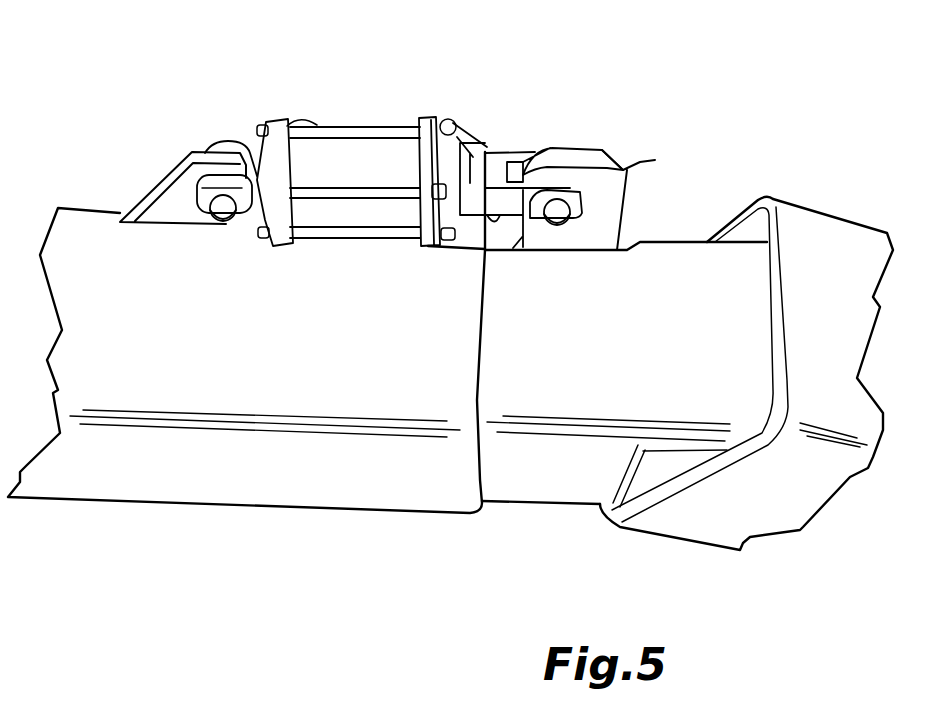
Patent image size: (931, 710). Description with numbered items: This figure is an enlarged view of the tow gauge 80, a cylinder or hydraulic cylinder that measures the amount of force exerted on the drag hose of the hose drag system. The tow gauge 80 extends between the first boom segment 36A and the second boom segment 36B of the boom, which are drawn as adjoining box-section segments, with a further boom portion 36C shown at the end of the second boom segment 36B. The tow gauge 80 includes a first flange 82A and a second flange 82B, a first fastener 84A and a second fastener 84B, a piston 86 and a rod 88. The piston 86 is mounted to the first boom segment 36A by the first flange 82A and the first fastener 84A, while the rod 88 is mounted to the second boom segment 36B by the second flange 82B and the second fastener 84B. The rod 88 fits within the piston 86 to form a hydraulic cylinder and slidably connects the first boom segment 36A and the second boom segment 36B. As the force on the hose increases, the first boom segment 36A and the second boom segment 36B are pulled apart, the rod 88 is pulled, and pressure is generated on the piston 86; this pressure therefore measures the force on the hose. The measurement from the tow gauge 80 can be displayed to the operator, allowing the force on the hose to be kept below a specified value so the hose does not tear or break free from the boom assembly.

The first boom segment 36A is at (340, 492).
The second boom segment 36B is at (548, 483).
The end bracket section 36C is at (685, 520).
The tow gauge 80 is at (385, 138).
The first flange 82A is at (137, 200).
The second flange 82B is at (632, 172).
The first fastener 84A is at (218, 143).
The second fastener 84B is at (568, 150).
The piston 86 is at (385, 133).
The rod 88 is at (477, 150).